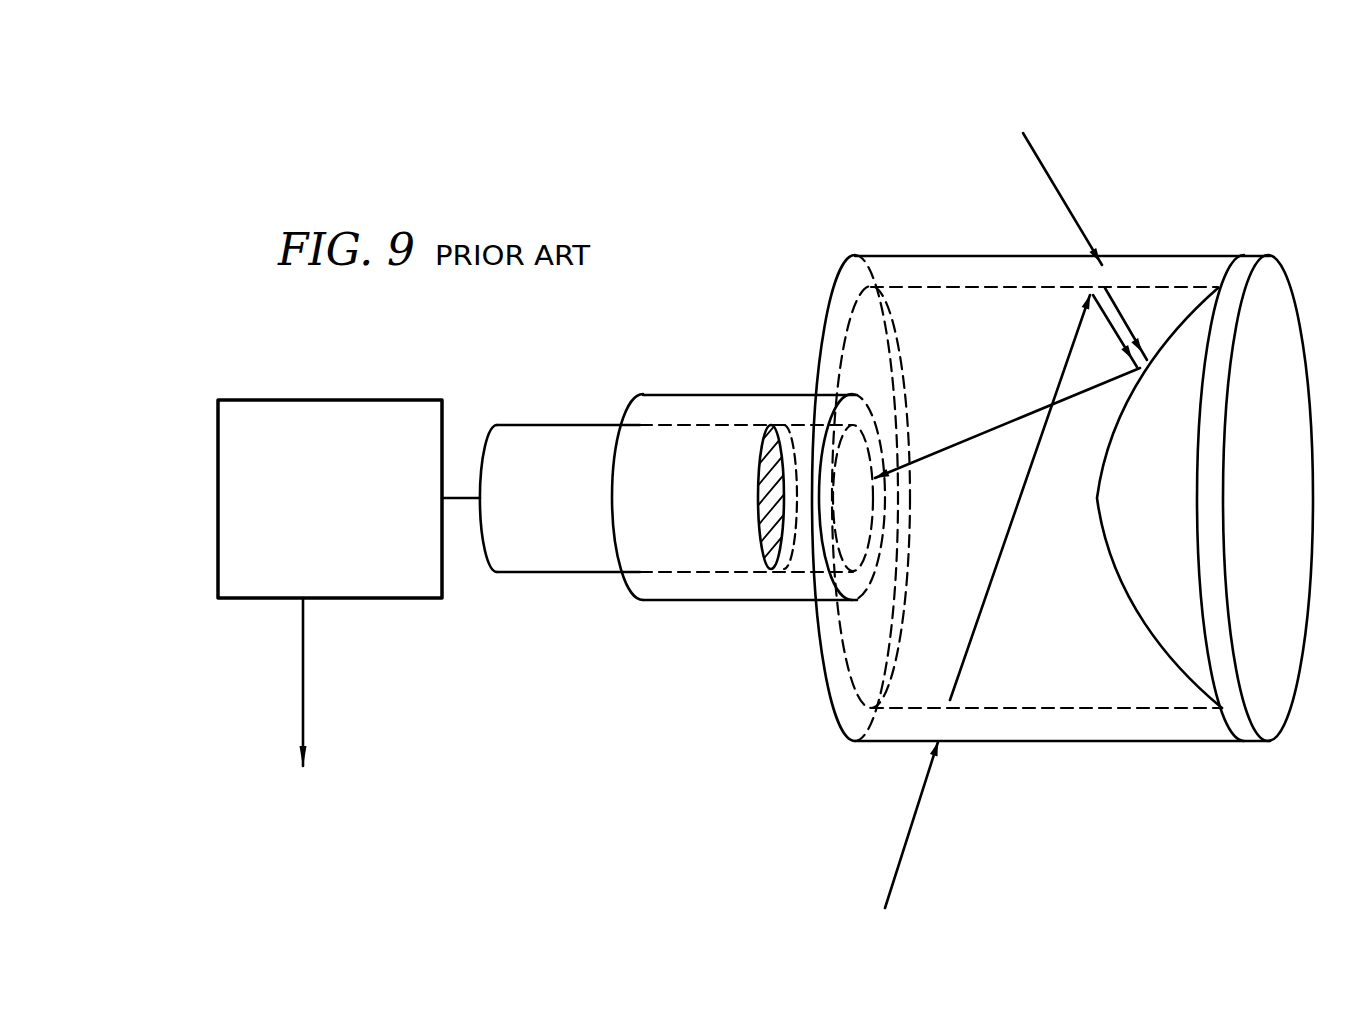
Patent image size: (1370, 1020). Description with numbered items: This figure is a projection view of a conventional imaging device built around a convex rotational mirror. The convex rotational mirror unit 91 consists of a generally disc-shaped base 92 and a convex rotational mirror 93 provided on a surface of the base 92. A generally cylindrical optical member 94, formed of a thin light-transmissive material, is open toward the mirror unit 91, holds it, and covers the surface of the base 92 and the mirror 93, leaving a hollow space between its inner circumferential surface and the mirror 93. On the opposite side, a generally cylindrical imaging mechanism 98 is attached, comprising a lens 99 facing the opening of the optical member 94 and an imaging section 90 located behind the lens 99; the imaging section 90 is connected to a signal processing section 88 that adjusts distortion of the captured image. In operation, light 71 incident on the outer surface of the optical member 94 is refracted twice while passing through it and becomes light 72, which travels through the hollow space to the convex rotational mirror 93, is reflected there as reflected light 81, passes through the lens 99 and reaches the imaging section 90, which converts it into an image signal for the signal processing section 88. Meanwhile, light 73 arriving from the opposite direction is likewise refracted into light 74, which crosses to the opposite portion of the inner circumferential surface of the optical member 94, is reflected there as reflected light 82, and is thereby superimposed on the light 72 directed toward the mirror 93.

The signal processing section 88 is at (340, 398).
The imaging section 90 is at (573, 520).
The lens 99 is at (768, 548).
The imaging mechanism 98 is at (763, 652).
The optical member 94 is at (1075, 782).
The convex rotational mirror unit 91 is at (1295, 826).
The convex rotational mirror 93 is at (1183, 630).
The base 92 is at (1255, 742).
The light 71 is at (1048, 172).
The light 72 is at (1127, 317).
The reflected light 82 is at (1113, 330).
The reflected light 81 is at (1003, 423).
The light 74 is at (1000, 570).
The light 73 is at (908, 832).